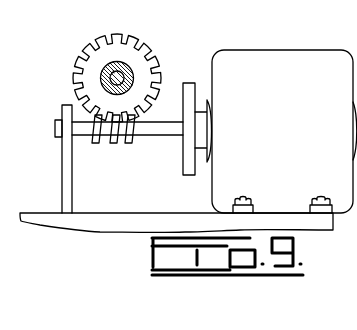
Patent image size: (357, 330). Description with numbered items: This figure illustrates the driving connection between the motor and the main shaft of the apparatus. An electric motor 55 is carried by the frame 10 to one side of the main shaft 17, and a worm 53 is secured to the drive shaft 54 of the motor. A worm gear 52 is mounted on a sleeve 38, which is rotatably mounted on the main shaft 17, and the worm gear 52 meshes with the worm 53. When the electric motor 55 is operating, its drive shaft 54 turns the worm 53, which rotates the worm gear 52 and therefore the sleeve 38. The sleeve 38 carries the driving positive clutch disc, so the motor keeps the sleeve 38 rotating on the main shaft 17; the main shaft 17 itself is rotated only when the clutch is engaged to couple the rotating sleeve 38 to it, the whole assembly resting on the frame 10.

The frame 10 is at (39, 215).
The main shaft 17 is at (101, 76).
The sleeve 38 is at (133, 76).
The worm gear 52 is at (125, 53).
The worm 53 is at (103, 144).
The drive shaft 54 is at (161, 136).
The electric motor 55 is at (285, 63).